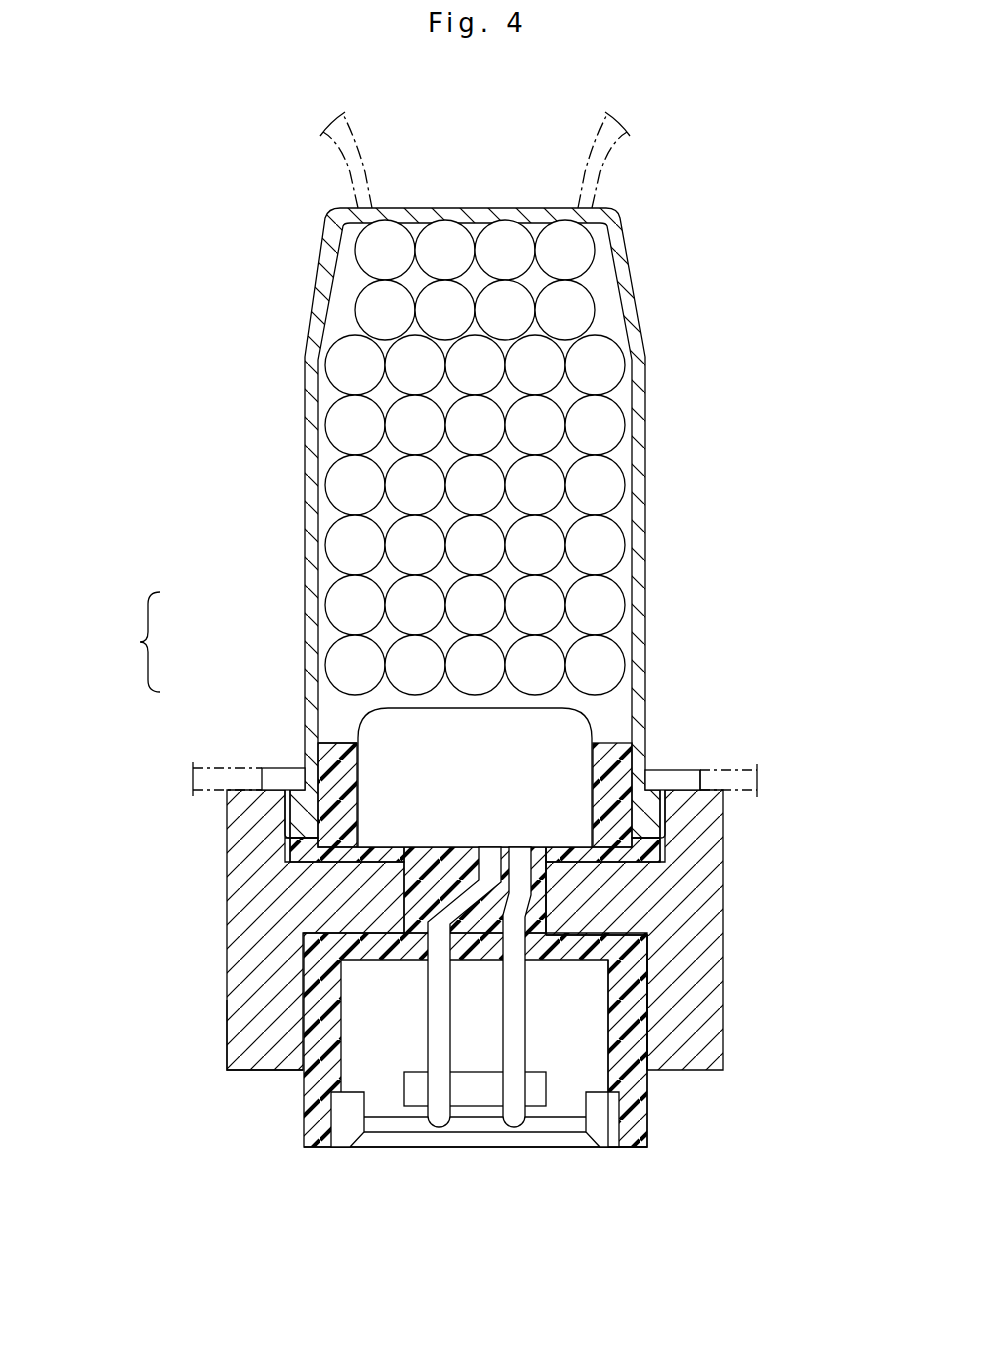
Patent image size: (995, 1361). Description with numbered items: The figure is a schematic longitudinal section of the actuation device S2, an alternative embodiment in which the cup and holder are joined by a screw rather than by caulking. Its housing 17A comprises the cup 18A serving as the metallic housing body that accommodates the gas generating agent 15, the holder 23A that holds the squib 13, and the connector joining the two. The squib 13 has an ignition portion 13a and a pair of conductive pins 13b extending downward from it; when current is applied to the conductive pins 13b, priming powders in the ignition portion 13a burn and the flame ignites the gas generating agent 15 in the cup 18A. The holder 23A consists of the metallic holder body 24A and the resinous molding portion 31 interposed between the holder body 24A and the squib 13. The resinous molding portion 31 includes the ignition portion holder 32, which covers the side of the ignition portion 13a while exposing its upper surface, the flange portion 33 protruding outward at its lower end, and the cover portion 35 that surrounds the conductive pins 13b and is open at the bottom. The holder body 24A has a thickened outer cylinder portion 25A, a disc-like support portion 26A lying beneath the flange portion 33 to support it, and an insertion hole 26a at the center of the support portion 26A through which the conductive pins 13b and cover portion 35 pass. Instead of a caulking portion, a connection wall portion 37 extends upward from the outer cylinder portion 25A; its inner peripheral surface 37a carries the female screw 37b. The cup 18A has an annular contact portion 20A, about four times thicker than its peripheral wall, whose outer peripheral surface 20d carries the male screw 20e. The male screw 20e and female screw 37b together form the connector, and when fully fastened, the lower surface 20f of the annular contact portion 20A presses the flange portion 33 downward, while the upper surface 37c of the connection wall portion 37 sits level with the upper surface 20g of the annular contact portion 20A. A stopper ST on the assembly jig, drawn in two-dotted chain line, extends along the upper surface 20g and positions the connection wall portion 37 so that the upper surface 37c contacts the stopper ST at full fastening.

The actuation device S2 is at (654, 245).
The gas generating agent 15 is at (607, 427).
The housing 17A is at (124, 642).
The cup 18A is at (296, 584).
The holder 23A is at (249, 779).
The ignition portion holder 32 is at (335, 748).
The outer peripheral surface 20d is at (284, 792).
The stopper ST is at (193, 768).
The male screw 20e is at (282, 806).
The annular contact portion 20A is at (288, 826).
The female screw 37b is at (302, 835).
The holder body 24A is at (228, 999).
The outer cylinder portion 25A is at (270, 1065).
The squib 13 is at (417, 1046).
The conductive pins 13b is at (515, 1118).
The ignition portion 13a is at (572, 733).
The upper surface 20g is at (650, 790).
The inner peripheral surface 37a is at (655, 792).
The upper surface 37c is at (757, 780).
The connection wall portion 37 is at (712, 823).
The lower surface 20f is at (662, 843).
The flange portion 33 is at (662, 857).
The support portion 26A is at (613, 917).
The insertion hole 26a is at (530, 913).
The cover portion 35 is at (633, 1043).
The resinous molding portion 31 is at (654, 1127).